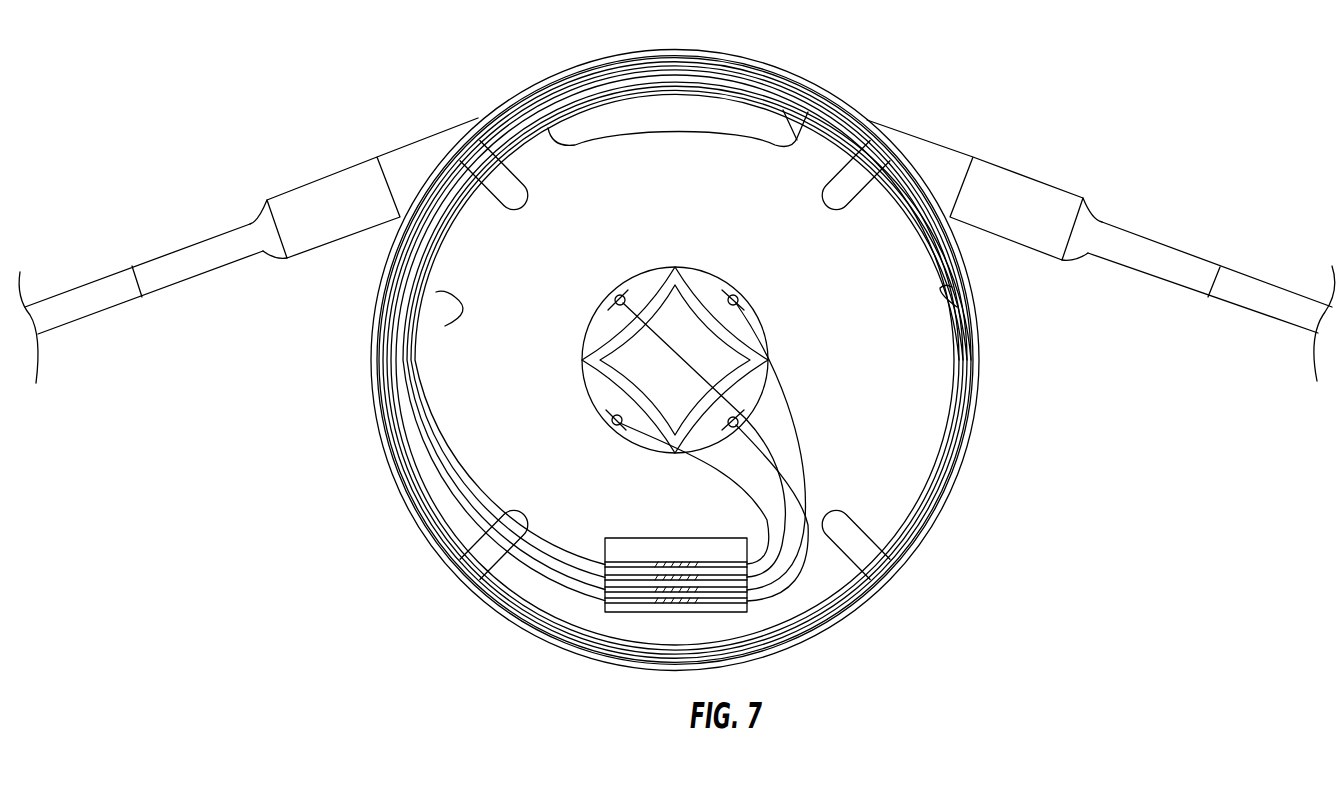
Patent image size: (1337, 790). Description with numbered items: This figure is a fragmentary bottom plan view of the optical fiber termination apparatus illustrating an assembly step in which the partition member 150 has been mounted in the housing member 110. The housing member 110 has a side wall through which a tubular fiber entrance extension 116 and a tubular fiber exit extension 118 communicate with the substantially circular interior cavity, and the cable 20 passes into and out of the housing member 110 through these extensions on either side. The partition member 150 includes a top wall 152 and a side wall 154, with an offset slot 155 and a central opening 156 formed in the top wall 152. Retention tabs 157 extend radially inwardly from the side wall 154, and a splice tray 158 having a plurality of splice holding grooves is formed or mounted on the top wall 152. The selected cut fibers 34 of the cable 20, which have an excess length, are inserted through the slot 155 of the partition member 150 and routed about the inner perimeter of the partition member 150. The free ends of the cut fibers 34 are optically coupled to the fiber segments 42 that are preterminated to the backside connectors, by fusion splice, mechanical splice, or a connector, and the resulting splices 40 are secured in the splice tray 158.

The cable 20 is at (78, 300).
The cut fibers 34 is at (445, 326).
The splices 40 is at (673, 570).
The optical fiber segment 42 is at (760, 407).
The housing member 110 is at (835, 93).
The tubular fiber entrance extension 116 is at (943, 160).
The tubular fiber exit extension 118 is at (412, 167).
The partition member 150 is at (962, 402).
The top wall 152 is at (905, 470).
The side wall 154 is at (957, 307).
The offset slot 155 is at (690, 123).
The central opening 156 is at (676, 270).
The retention tabs 157 is at (512, 187).
The splice tray 158 is at (705, 612).